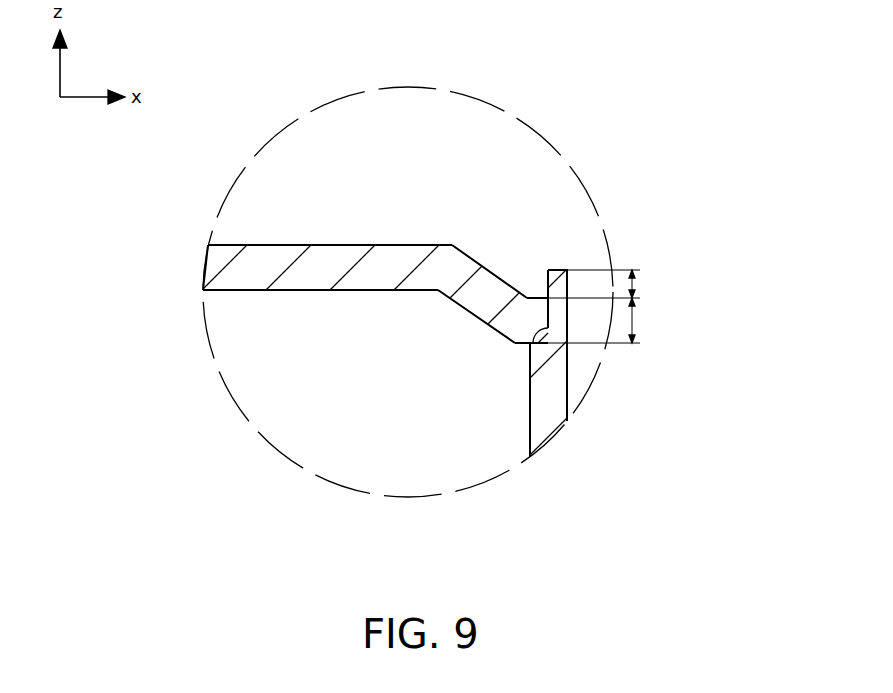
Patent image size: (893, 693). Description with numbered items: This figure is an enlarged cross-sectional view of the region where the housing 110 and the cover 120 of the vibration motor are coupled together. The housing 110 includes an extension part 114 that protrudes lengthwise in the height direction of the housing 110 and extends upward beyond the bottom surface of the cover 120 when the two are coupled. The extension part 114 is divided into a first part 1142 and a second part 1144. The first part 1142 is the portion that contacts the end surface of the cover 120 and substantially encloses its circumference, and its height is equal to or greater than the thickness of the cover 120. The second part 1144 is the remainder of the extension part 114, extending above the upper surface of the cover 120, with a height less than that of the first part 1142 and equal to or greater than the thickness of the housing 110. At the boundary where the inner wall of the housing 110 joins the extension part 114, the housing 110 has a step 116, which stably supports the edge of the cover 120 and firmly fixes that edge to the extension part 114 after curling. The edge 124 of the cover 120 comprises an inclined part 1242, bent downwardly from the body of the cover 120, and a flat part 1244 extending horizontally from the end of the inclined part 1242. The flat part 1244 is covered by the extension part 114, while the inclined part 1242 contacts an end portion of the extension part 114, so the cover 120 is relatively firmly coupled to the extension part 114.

The housing 110 is at (560, 412).
The extension part 114 is at (674, 306).
The first part 1142 is at (665, 310).
The second part 1144 is at (665, 270).
The step 116 is at (540, 347).
The cover 120 is at (250, 264).
The edge 124 is at (480, 235).
The inclined part 1242 is at (488, 292).
The flat part 1244 is at (540, 302).